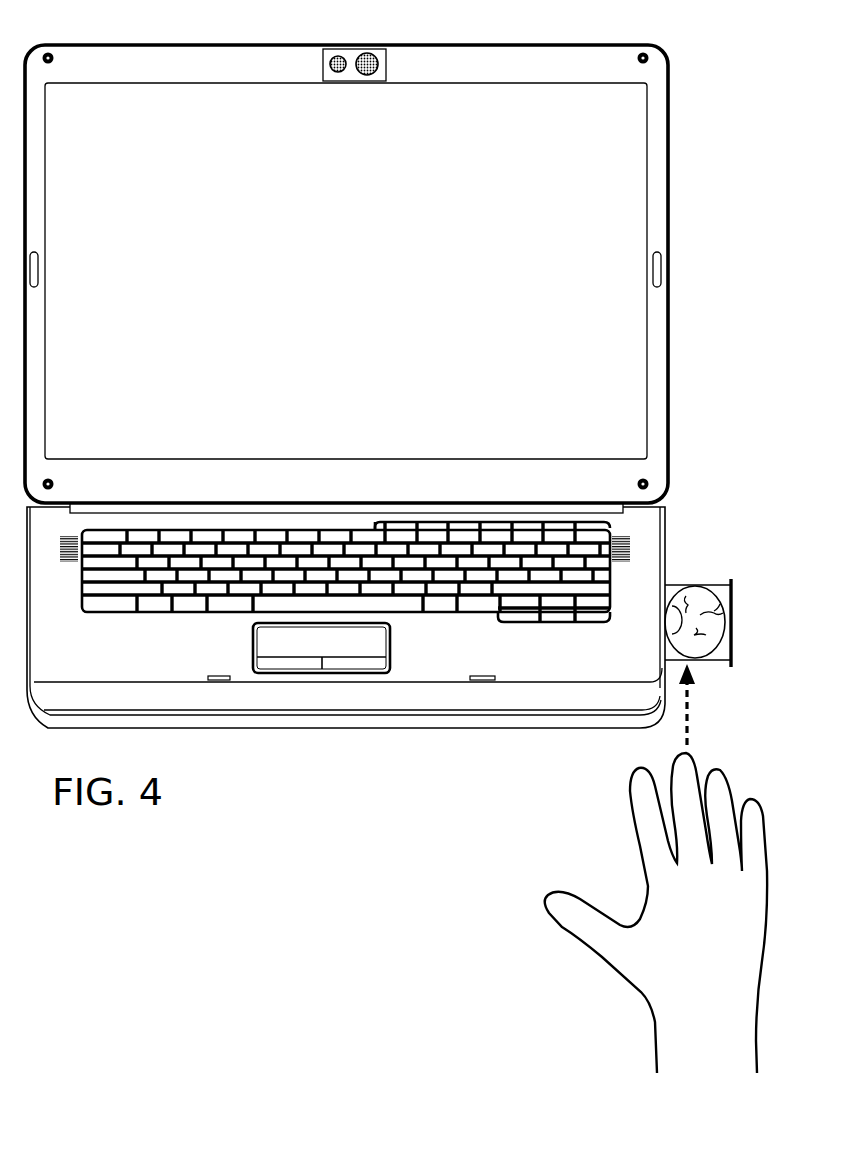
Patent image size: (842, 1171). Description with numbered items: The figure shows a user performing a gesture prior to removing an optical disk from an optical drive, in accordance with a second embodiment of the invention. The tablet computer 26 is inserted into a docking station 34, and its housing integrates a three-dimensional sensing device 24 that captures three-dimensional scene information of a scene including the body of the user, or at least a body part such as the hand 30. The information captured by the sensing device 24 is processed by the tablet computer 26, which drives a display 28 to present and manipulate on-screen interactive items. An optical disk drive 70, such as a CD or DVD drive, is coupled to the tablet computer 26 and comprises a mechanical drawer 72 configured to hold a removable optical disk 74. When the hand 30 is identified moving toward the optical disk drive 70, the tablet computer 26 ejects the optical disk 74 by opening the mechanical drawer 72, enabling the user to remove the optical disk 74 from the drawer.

The 3D sensing device 24 is at (386, 62).
The tablet computer 26 is at (377, 262).
The display 28 is at (634, 122).
The hand 30 is at (601, 965).
The docking station 34 is at (593, 728).
The optical disk drive 70 is at (713, 631).
The mechanical drawer 72 is at (713, 656).
The optical disk 74 is at (700, 598).